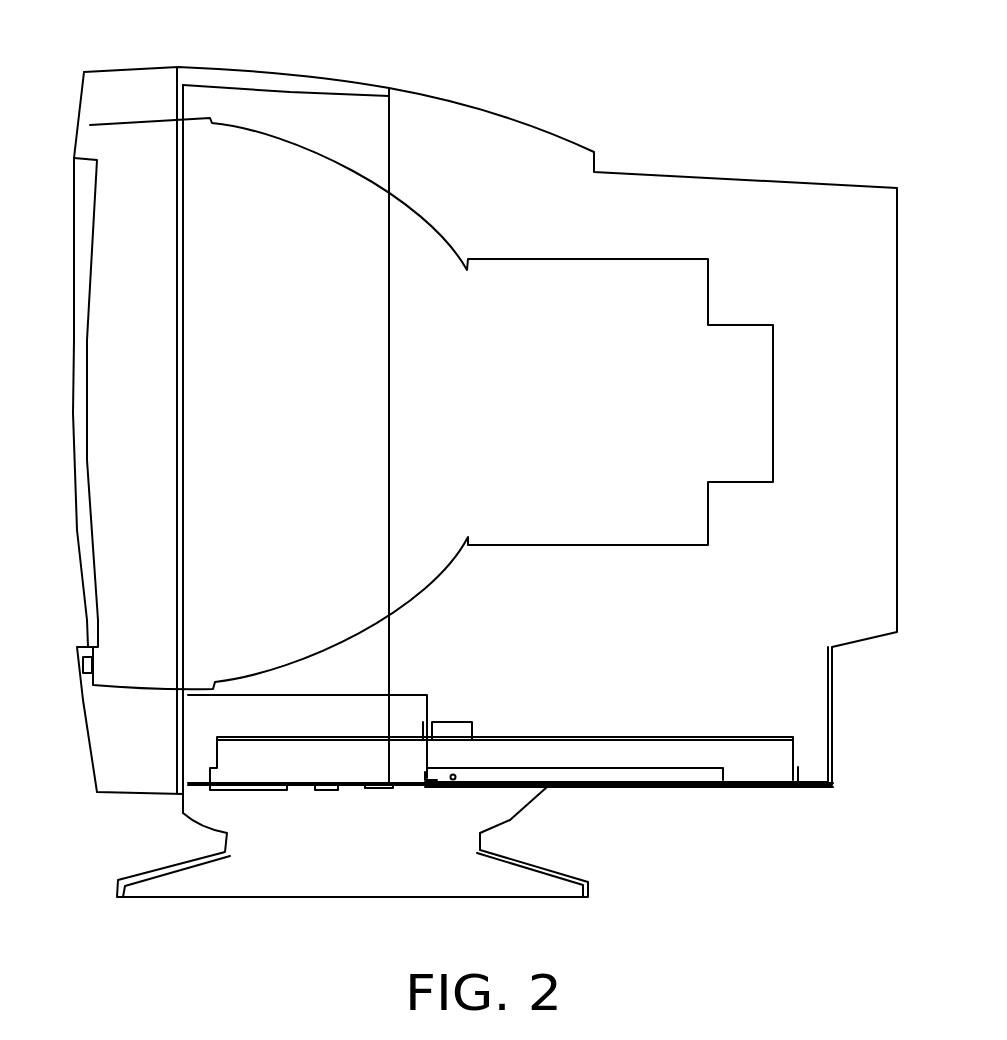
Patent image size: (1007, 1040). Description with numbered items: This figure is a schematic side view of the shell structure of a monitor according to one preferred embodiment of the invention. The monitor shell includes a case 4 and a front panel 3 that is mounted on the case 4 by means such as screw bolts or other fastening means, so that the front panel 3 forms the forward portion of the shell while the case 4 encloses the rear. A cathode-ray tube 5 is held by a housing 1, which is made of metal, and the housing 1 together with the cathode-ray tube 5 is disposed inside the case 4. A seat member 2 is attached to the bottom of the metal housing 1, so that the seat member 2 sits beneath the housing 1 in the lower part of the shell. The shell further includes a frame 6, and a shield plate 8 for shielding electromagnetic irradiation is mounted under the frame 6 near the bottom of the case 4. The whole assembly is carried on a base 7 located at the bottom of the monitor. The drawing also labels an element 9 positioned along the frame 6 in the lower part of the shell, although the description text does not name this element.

The frame 1 is at (390, 128).
The housing box 2 is at (319, 685).
The front casing 3 is at (123, 82).
The rear casing 4 is at (672, 175).
The cathode ray tube 5 is at (428, 282).
The drawer unit 6 is at (806, 761).
The stand 7 is at (512, 822).
The lower rail 8 is at (743, 785).
The upper rail 9 is at (575, 738).